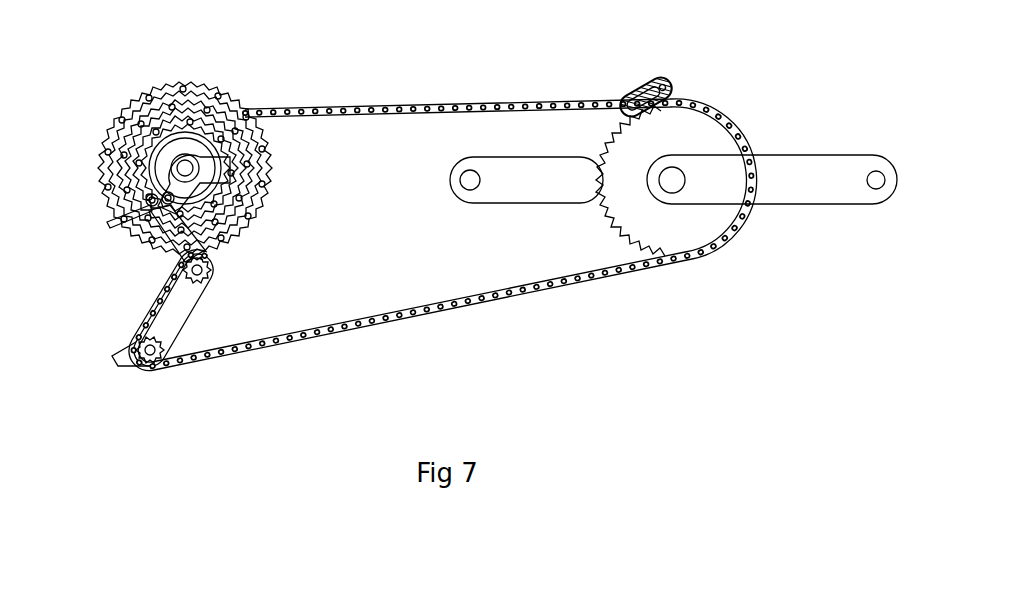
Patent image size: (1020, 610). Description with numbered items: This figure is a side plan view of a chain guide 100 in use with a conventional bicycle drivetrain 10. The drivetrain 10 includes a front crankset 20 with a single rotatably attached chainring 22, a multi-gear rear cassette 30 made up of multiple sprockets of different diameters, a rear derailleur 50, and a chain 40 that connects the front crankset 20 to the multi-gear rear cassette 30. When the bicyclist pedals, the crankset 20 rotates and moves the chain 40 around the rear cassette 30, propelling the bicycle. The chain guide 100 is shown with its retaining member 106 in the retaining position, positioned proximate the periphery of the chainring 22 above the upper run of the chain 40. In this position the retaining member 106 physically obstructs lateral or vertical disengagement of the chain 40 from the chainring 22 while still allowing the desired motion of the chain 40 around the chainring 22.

The bicycle drivetrain 10 is at (409, 45).
The front crankset 20 is at (688, 143).
The chainring 22 is at (635, 203).
The multi-gear rear cassette 30 is at (194, 64).
The chain 40 is at (557, 107).
The rear derailleur 50 is at (130, 280).
The chain guide 100 is at (698, 59).
The retaining member 106 is at (635, 95).